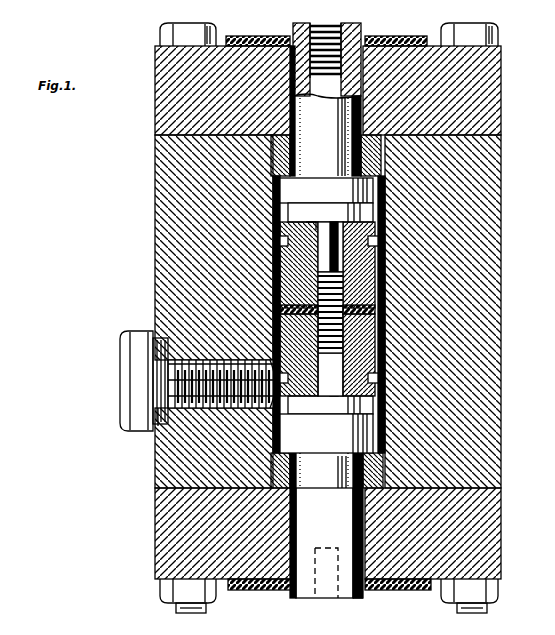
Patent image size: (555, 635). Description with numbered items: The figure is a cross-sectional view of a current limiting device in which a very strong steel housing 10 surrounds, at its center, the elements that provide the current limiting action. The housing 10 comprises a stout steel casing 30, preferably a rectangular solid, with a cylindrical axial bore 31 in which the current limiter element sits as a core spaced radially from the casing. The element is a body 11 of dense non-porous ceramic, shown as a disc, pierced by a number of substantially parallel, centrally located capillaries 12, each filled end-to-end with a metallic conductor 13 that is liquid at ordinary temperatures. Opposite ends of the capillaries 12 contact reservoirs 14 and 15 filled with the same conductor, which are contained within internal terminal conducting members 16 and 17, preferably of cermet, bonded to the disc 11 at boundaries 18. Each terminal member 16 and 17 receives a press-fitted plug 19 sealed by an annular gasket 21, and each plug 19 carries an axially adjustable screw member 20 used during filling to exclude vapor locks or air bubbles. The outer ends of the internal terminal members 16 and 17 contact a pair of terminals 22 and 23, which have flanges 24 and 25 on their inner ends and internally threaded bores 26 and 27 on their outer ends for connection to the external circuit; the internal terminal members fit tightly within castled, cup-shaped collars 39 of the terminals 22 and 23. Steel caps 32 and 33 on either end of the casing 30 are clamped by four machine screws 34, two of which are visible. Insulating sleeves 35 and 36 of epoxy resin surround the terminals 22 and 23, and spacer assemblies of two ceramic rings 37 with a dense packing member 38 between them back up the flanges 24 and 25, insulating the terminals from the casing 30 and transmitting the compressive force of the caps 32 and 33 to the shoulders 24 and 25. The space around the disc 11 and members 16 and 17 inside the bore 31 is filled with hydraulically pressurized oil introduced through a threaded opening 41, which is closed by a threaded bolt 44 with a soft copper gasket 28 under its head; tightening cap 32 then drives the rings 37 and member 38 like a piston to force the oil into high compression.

The steel housing 10 is at (146, 246).
The ceramic body 11 is at (367, 301).
The capillaries 12 is at (299, 355).
The metallic conductor 13 is at (360, 265).
The reservoir 14 is at (299, 265).
The reservoir 15 is at (336, 335).
The internal terminal conducting member 16 is at (372, 250).
The internal terminal conducting member 17 is at (372, 352).
The boundaries 18 is at (272, 301).
The plug 19 is at (305, 222).
The screw member 20 is at (326, 222).
The annular gasket 21 is at (305, 248).
The terminal 22 is at (290, 20).
The terminal 23 is at (347, 592).
The flange 24 is at (366, 192).
The flange 25 is at (316, 427).
The internally threaded bore 26 is at (318, 72).
The internally threaded bore 27 is at (318, 590).
The gasket 28 is at (158, 417).
The steel casing 30 is at (492, 268).
The cylindrical axial bore 31 is at (266, 278).
The steel cap 32 is at (492, 81).
The steel cap 33 is at (492, 517).
The machine screws 34 is at (153, 24).
The insulating sleeve 35 is at (385, 29).
The insulating sleeve 36 is at (362, 526).
The ceramic rings 37 is at (288, 150).
The packing member 38 is at (266, 150).
The cup-shaped collar 39 is at (368, 213).
The threaded opening 41 is at (204, 352).
The threaded bolt 44 is at (112, 374).